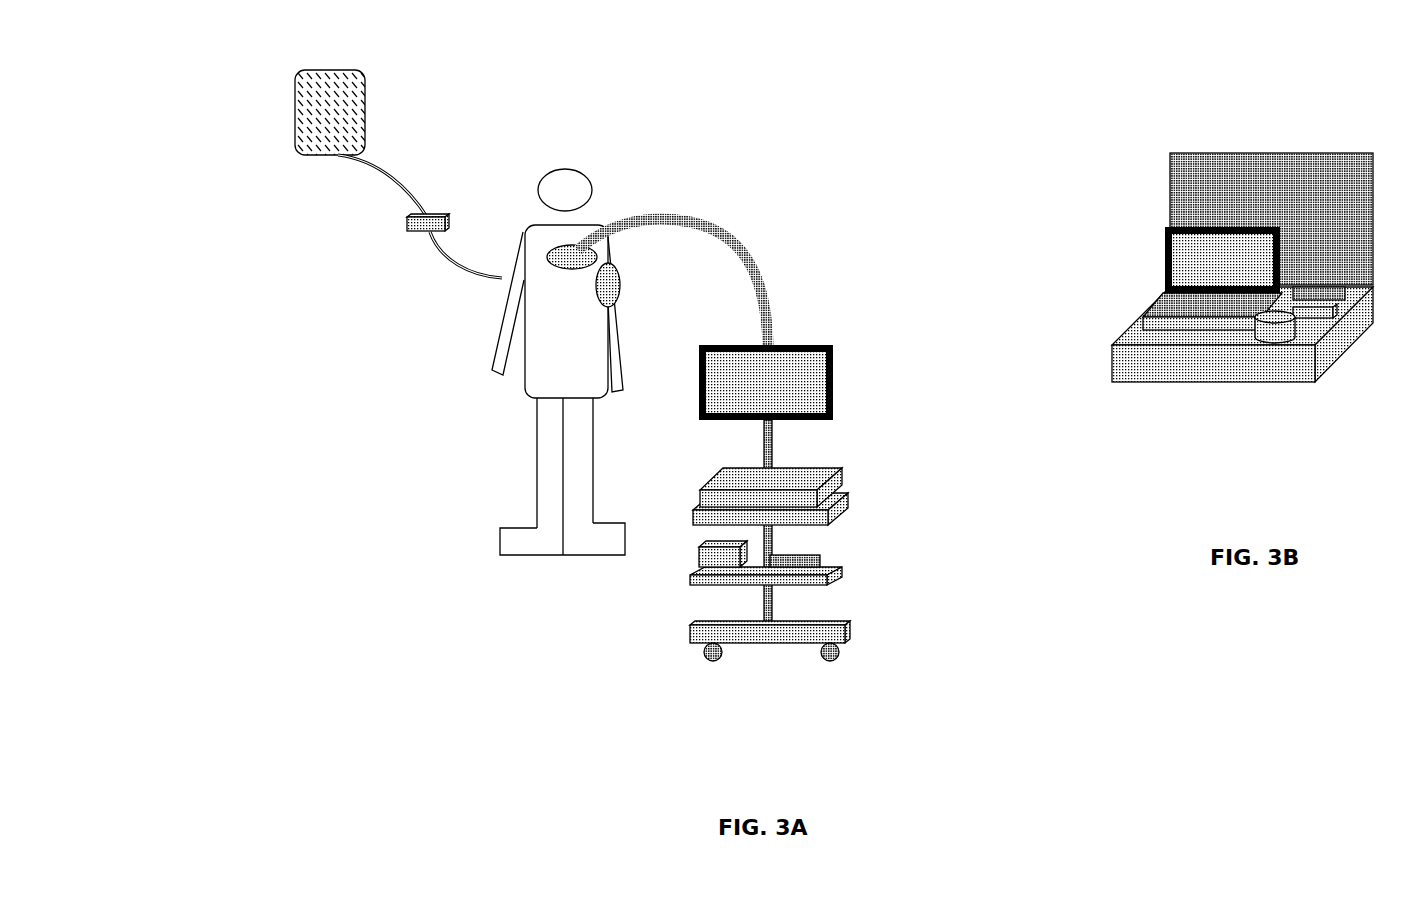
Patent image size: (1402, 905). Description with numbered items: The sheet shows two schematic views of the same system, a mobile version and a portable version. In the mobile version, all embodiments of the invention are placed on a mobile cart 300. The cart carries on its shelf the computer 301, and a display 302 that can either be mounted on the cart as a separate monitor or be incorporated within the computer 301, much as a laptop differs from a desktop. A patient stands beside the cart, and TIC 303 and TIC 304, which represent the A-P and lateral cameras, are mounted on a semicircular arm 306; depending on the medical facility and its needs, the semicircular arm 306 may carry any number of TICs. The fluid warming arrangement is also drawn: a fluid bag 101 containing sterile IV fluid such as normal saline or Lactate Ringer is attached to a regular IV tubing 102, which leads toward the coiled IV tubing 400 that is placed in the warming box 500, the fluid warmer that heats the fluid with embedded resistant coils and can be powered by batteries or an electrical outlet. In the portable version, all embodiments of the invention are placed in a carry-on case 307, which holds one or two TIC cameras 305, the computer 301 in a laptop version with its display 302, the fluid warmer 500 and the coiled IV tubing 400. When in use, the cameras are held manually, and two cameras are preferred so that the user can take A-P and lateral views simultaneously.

In FIG. 3A, the fluid bag 101 is at (307, 137).
In FIG. 3A, the IV tubing 102 is at (383, 148).
In FIG. 3B, the warming box 500 is at (1325, 312).
In FIG. 3A, the TIC 303 is at (570, 267).
In FIG. 3A, the TIC 304 is at (605, 293).
In FIG. 3A, the semicircular arm 306 is at (770, 262).
In FIG. 3A, the display 302 is at (807, 383).
In FIG. 3B, the display 302 is at (1197, 255).
In FIG. 3A, the computer 301 is at (780, 486).
In FIG. 3B, the computer 301 is at (1145, 316).
In FIG. 3A, the coiled IV tubing 400 is at (817, 563).
In FIG. 3B, the coiled IV tubing 400 is at (1333, 292).
In FIG. 3A, the mobile cart 300 is at (843, 637).
In FIG. 3B, the carry-on case 307 is at (1307, 223).
In FIG. 3B, the TIC camera 305 is at (1277, 330).